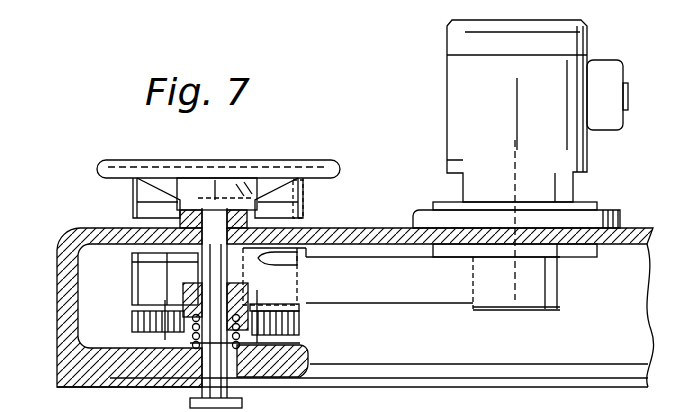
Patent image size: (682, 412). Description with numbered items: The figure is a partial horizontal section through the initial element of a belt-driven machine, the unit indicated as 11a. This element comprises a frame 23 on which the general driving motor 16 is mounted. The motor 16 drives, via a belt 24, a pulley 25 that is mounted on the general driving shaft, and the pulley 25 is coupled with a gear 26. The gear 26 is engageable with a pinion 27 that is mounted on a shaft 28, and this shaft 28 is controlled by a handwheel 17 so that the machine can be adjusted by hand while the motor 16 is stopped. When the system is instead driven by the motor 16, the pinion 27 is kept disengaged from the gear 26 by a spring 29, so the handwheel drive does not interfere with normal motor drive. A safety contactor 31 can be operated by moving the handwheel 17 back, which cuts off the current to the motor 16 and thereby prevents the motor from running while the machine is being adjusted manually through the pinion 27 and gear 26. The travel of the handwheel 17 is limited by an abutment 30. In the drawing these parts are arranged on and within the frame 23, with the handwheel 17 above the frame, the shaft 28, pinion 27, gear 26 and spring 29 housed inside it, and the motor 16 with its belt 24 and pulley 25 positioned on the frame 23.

The spindle unit base 11a is at (432, 134).
The general driving motor 16 is at (563, 70).
The handwheel 17 is at (311, 163).
The frame 23 is at (83, 230).
The belt 24 is at (432, 292).
The pulley 25 is at (133, 303).
The gear 26 is at (300, 320).
The pinion 27 is at (132, 323).
The shaft 28 is at (222, 274).
The spring 29 is at (237, 337).
The abutment 30 is at (243, 404).
The safety contactor 31 is at (295, 263).